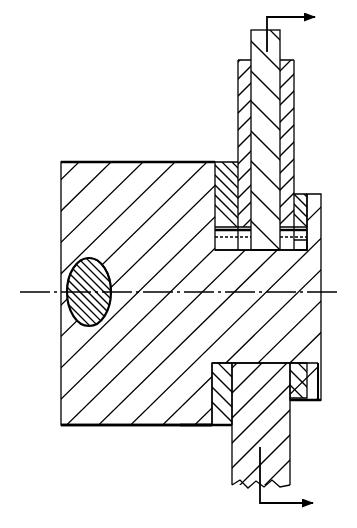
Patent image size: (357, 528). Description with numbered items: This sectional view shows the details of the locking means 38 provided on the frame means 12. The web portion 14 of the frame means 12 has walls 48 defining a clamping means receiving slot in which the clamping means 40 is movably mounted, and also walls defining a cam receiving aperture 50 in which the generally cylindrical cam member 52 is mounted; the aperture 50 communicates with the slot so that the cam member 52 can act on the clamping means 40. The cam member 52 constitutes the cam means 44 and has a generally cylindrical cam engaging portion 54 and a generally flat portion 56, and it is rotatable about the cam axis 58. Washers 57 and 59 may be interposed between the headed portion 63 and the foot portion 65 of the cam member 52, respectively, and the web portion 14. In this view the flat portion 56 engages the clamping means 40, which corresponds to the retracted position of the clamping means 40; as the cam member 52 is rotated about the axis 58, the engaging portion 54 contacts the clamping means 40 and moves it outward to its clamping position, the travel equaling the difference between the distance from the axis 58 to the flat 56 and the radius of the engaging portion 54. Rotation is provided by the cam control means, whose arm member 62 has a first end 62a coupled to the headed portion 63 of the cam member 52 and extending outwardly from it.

The locking means 38 is at (123, 82).
The cam member 52 is at (152, 159).
The arm member 62 is at (85, 328).
The first end of arm member 62a is at (88, 260).
The cam axis 58 is at (40, 292).
The cam means 44 is at (95, 426).
The headed portion 63 is at (190, 427).
The walls defining clamping means receiving slot 48 is at (257, 57).
The clamping means 40 is at (279, 48).
The washer 57 is at (225, 162).
The washer 59 is at (300, 192).
The flat portion 56 is at (258, 250).
The foot portion 65 is at (307, 252).
The cam engaging portion 54 is at (268, 325).
The cam receiving aperture 50 is at (278, 362).
The frame means 12 is at (290, 412).
The web portion 14 is at (290, 459).